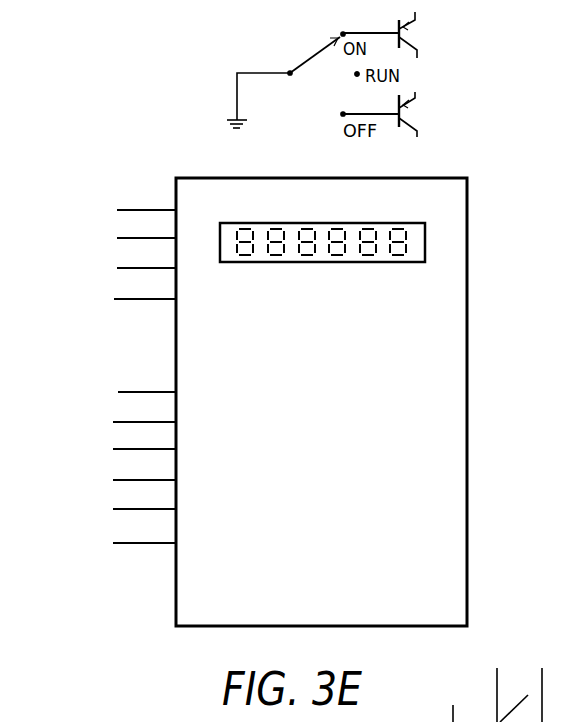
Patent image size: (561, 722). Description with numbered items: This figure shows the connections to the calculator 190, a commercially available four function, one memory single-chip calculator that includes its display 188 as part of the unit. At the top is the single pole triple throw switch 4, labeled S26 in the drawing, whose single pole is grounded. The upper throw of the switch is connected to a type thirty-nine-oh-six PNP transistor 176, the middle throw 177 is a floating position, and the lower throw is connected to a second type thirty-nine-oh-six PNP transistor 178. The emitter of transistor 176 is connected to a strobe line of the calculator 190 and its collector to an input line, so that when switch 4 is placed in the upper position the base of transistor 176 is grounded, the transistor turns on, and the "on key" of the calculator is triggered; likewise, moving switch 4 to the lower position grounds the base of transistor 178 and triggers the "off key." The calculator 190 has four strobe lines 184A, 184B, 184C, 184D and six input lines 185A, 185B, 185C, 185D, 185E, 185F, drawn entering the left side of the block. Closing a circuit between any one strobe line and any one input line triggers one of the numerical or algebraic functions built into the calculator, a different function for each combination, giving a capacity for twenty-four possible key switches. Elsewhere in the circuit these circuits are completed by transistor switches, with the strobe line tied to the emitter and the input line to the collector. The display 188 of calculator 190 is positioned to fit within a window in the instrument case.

The single pole triple throw switch 4 is at (306, 43).
The mode selector switch S26 is at (293, 80).
The PNP transistor 176 is at (407, 28).
The middle throw 177 is at (405, 70).
The PNP transistor 178 is at (407, 110).
The strobe line 184A is at (127, 210).
The strobe line 184B is at (127, 238).
The strobe line 184C is at (127, 268).
The strobe line 184D is at (124, 299).
The input line 185A is at (125, 392).
The input line 185B is at (124, 422).
The input line 185C is at (124, 449).
The input line 185D is at (128, 480).
The input line 185E is at (127, 509).
The input line 185F is at (130, 543).
The display 188 is at (427, 240).
The calculator 190 is at (468, 461).